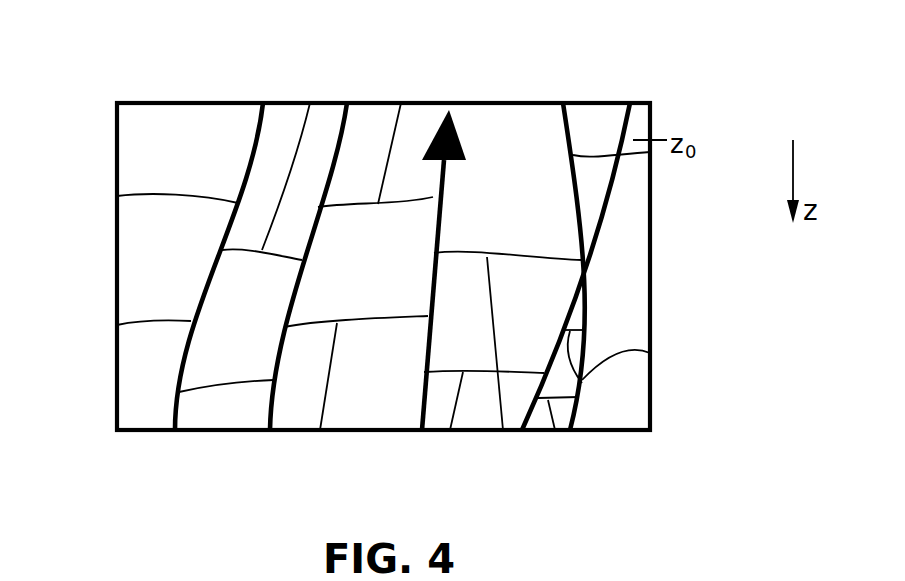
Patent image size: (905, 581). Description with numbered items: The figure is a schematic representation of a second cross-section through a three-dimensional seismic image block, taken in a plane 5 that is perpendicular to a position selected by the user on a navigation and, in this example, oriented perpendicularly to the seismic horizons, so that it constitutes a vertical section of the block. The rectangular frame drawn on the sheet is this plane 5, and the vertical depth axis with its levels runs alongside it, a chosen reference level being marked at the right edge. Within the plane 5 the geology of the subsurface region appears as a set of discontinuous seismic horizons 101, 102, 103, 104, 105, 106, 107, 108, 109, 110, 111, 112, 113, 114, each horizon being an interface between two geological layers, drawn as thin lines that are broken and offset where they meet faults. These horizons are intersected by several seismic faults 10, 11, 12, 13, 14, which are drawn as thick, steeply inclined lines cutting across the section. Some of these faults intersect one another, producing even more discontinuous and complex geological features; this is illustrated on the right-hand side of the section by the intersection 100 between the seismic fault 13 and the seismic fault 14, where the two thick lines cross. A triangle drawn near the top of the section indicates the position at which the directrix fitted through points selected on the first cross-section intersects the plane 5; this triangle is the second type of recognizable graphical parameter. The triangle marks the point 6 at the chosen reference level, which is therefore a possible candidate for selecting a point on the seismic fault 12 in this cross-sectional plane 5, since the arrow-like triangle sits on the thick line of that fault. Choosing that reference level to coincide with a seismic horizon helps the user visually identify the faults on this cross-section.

The plane 5 is at (174, 86).
The point 6 is at (453, 133).
The seismic fault 10 is at (175, 408).
The seismic fault 11 is at (270, 410).
The seismic fault 12 is at (420, 407).
The seismic fault 13 is at (570, 122).
The seismic fault 14 is at (628, 125).
The intersection 100 is at (586, 282).
The seismic horizon 101 is at (145, 197).
The seismic horizon 102 is at (147, 325).
The seismic horizon 103 is at (227, 388).
The seismic horizon 104 is at (310, 103).
The seismic horizon 105 is at (320, 430).
The seismic horizon 106 is at (401, 103).
The seismic horizon 107 is at (450, 430).
The seismic horizon 108 is at (503, 430).
The seismic horizon 109 is at (633, 153).
The seismic horizon 110 is at (618, 243).
The seismic horizon 111 is at (623, 353).
The seismic horizon 112 is at (555, 430).
The seismic horizon 113 is at (583, 384).
The seismic horizon 114 is at (598, 156).